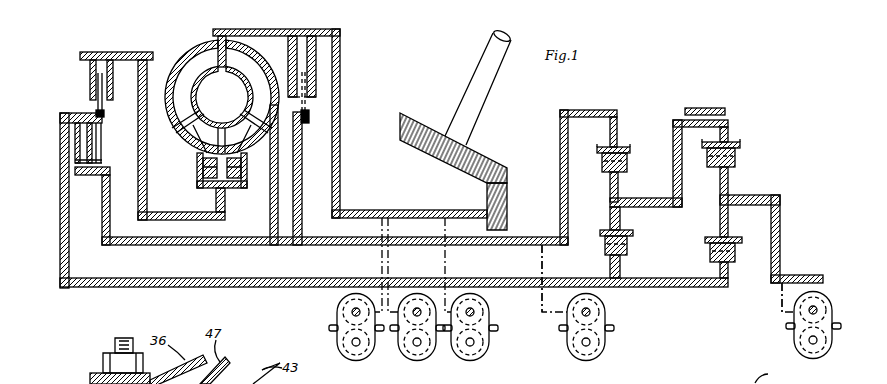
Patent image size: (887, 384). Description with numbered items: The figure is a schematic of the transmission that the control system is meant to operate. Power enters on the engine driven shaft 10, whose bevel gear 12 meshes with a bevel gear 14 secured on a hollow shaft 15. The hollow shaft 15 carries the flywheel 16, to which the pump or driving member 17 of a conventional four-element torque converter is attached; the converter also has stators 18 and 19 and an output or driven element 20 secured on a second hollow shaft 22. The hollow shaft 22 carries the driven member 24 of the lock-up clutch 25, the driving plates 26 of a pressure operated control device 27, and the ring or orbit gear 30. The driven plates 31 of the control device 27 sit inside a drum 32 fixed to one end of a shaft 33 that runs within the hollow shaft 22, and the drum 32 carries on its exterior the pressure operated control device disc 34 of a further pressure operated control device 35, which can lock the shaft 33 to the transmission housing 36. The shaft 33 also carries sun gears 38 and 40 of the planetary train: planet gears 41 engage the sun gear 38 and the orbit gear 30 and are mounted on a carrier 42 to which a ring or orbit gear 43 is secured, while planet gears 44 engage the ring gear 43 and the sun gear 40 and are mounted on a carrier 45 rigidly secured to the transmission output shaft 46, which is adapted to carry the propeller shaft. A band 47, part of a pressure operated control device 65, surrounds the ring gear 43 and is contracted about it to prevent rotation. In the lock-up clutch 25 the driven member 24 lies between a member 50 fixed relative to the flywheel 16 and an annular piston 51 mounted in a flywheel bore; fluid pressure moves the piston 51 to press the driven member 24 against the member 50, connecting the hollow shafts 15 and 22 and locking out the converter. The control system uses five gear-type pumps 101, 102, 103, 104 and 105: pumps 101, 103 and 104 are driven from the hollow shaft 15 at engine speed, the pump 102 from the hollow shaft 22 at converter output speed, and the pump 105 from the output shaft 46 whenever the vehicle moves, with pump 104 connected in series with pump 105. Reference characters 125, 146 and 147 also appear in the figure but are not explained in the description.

The engine driven shaft 10 is at (478, 81).
The bevel gear 12 is at (478, 147).
The bevel gear 14 is at (508, 185).
The hollow shaft 15 is at (364, 210).
The flywheel 16 is at (341, 31).
The pump or driving member 17 is at (190, 55).
The stator 18 is at (195, 145).
The stator 19 is at (250, 148).
The output or driven element 20 is at (253, 85).
The hollow shaft 22 is at (540, 237).
The driven member 24 is at (300, 202).
The lock-up clutch 25 is at (304, 29).
The driving plates 26 is at (96, 168).
The pressure operated control device 27 is at (91, 178).
The ring or orbit gear 30 is at (620, 147).
The driven plates 31 is at (94, 145).
The drum 32 is at (104, 114).
The shaft 33 is at (516, 278).
The pressure operated control device disc 34 is at (99, 113).
The pressure operated control device 35 is at (88, 80).
The transmission housing 36 is at (122, 52).
The sun gear 38 is at (602, 246).
The sun gear 40 is at (708, 250).
The planet gears 41 is at (619, 186).
The carrier 42 is at (672, 165).
The ring or orbit gear 43 is at (726, 141).
The planet gears 44 is at (729, 185).
The carrier 45 is at (770, 195).
The transmission output shaft 46 is at (790, 275).
The band 47 is at (720, 108).
The member 50 is at (291, 37).
The piston 51 is at (316, 60).
The pressure operated control device 65 is at (692, 106).
The pump 101 is at (336, 328).
The pump 102 is at (605, 337).
The pump 103 is at (410, 347).
The pump 104 is at (470, 347).
The pump 105 is at (794, 334).
The connection 125 is at (773, 377).
The connection line 146 is at (571, 314).
The connection line 147 is at (702, 333).